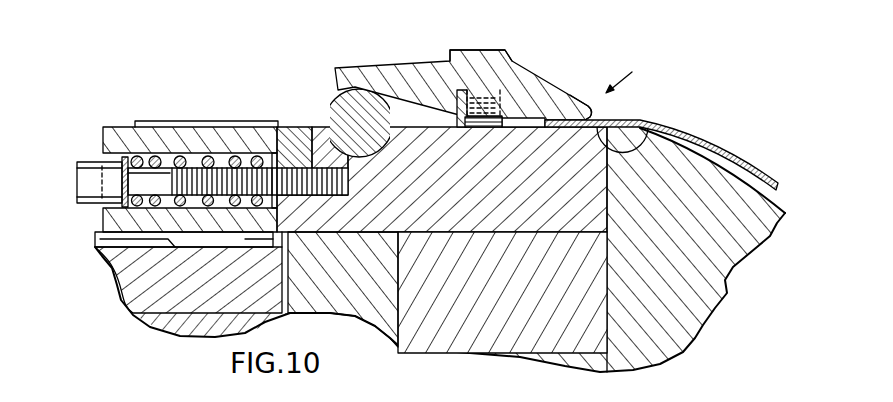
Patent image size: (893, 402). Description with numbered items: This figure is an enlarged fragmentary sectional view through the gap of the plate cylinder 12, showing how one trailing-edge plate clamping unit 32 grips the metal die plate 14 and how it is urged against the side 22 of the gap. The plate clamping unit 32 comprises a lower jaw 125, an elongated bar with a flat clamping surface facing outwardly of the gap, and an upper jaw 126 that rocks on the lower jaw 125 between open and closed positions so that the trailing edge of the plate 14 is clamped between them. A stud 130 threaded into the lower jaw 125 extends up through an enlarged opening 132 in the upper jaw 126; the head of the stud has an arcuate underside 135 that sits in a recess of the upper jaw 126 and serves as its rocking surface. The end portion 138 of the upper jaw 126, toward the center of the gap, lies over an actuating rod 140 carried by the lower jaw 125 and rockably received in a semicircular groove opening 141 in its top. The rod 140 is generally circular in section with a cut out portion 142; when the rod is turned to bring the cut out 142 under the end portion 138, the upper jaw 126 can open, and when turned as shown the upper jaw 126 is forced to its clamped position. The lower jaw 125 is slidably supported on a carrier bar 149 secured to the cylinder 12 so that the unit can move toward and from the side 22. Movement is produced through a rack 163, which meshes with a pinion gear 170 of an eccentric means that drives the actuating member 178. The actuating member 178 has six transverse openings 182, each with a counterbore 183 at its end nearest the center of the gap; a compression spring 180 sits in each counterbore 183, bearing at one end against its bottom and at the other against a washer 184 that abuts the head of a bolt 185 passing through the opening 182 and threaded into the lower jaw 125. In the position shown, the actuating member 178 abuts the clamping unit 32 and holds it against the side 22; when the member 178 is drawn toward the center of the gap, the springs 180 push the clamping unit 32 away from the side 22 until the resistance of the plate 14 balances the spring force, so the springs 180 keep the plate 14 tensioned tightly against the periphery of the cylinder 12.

The plate cylinder 12 is at (713, 290).
The metal die plate 14 is at (726, 151).
The side of gap 22 is at (656, 125).
The plate clamping unit 32 is at (631, 75).
The lower jaw 125 is at (604, 120).
The upper jaw 126 is at (572, 84).
The stud 130 is at (490, 62).
The enlarged opening 132 is at (553, 63).
The arcuate underside 135 is at (522, 92).
The end portion 138 is at (360, 67).
The actuating rod 140 is at (335, 92).
The semicircular groove opening 141 is at (323, 123).
The cut out portion 142 is at (325, 106).
The carrier bar 149 is at (506, 330).
The rack 163 is at (360, 300).
The pinion gear 170 is at (157, 307).
The actuating member 178 is at (127, 133).
The compression spring 180 is at (204, 156).
The transverse opening 182 is at (273, 153).
The counterbore 183 is at (170, 156).
The washer 184 is at (90, 203).
The bolt 185 is at (83, 178).